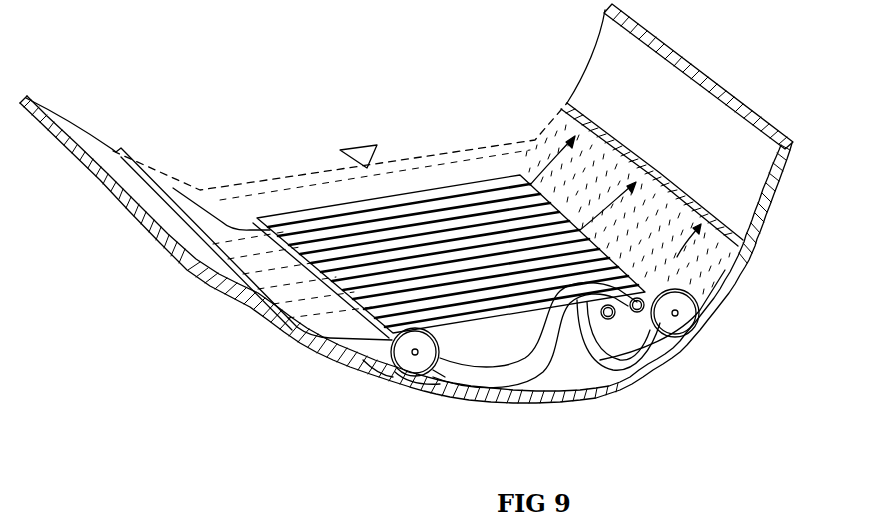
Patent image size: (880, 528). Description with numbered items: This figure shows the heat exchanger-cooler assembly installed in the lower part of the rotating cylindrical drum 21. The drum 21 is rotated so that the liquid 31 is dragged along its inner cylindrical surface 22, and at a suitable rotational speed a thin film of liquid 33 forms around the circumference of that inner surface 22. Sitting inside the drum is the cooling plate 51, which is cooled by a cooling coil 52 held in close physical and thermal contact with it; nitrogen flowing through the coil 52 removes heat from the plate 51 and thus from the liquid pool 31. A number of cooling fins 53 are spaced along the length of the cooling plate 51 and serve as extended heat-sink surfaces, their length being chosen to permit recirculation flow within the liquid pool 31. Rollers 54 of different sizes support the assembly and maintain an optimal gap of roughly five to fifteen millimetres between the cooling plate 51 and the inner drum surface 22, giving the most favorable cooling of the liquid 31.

The cylindrical drum 21 is at (708, 81).
The inner cylindrical surface 22 is at (746, 147).
The thin film of liquid 33 is at (740, 239).
The liquid 31 is at (684, 276).
The rollers 54 is at (411, 362).
The cooling coil 52 is at (458, 372).
The cooling fins 53 is at (462, 314).
The cooling plate 51 is at (574, 362).